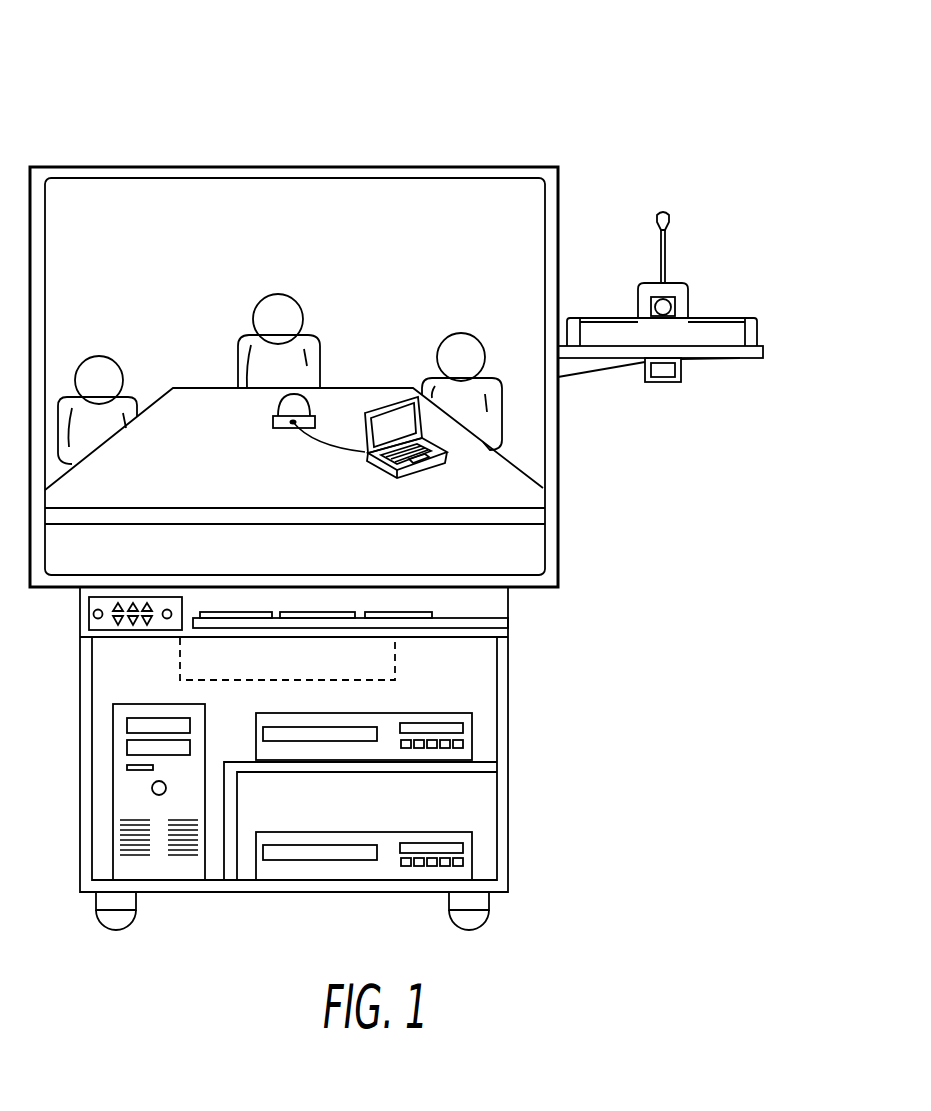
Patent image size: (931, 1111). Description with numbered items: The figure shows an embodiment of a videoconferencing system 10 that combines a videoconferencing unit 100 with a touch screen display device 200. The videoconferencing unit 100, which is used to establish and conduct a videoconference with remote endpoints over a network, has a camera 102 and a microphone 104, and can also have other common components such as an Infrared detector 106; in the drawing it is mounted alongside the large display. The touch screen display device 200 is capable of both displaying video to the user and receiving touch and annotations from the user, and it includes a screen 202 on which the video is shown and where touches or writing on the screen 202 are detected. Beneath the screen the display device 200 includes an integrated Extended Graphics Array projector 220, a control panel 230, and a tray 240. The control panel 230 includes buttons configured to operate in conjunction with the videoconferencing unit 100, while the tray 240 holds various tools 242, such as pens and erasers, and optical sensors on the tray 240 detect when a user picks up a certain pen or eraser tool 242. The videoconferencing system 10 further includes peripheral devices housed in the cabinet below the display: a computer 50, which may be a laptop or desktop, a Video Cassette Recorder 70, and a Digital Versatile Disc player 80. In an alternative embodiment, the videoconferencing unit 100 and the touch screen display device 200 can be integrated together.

The videoconferencing system 10 is at (615, 63).
The touch screen display device 200 is at (118, 166).
The screen 202 is at (212, 192).
The videoconferencing unit 100 is at (732, 280).
The camera 102 is at (653, 297).
The microphone 104 is at (663, 212).
The Infrared (IR) detector 106 is at (668, 383).
The tray 240 is at (495, 617).
The control panel 230 is at (89, 614).
The tools 242 is at (403, 610).
The integrated Extended Graphics Array (XGA) projector 220 is at (396, 660).
The computer 50 is at (113, 762).
The Video Cassette Recorder (VCR) 70 is at (472, 713).
The Digital Versatile Disc (DVD) player 80 is at (472, 833).